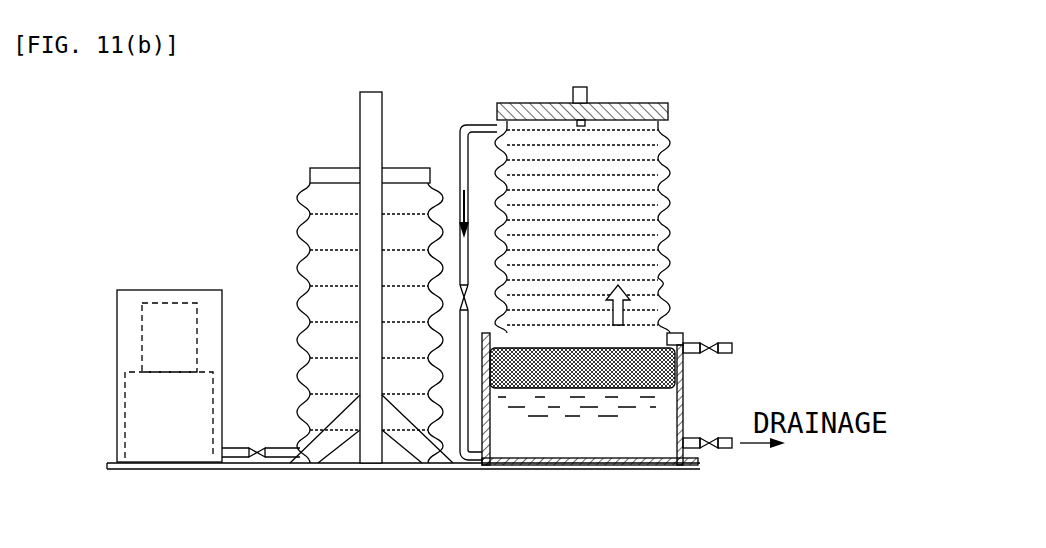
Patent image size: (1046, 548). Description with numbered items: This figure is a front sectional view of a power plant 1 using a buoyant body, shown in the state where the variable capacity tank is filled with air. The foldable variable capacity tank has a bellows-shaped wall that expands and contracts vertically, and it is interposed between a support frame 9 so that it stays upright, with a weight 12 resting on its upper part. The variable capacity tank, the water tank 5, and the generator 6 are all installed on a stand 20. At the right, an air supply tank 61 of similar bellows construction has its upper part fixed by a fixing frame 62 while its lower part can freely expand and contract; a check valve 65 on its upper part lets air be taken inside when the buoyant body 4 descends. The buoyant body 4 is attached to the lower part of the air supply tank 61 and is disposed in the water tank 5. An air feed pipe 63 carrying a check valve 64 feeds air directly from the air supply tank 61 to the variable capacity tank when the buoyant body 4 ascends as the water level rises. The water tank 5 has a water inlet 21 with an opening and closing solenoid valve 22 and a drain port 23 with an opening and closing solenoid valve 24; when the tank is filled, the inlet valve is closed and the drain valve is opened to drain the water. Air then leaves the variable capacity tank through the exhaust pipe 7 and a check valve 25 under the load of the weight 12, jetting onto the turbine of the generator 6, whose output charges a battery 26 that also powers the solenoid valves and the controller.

The power plant 1 is at (247, 95).
The buoyant body 4 is at (683, 372).
The water tank 5 is at (683, 413).
The generator 6 is at (118, 420).
The exhaust pipe 7 is at (233, 465).
The support frame 9 is at (360, 127).
The weight 12 is at (310, 171).
The stand 20 is at (452, 470).
The water inlet 21 is at (686, 333).
The opening and closing solenoid valve 22 is at (709, 341).
The drain port 23 is at (693, 468).
The opening and closing solenoid valve 24 is at (713, 452).
The check valve 25 is at (258, 465).
The battery 26 is at (140, 334).
The air supply tank 61 is at (672, 190).
The fixing frame 62 is at (635, 103).
The air feed pipe 63 is at (458, 140).
The check valve 64 is at (468, 297).
The check valve 65 is at (578, 86).